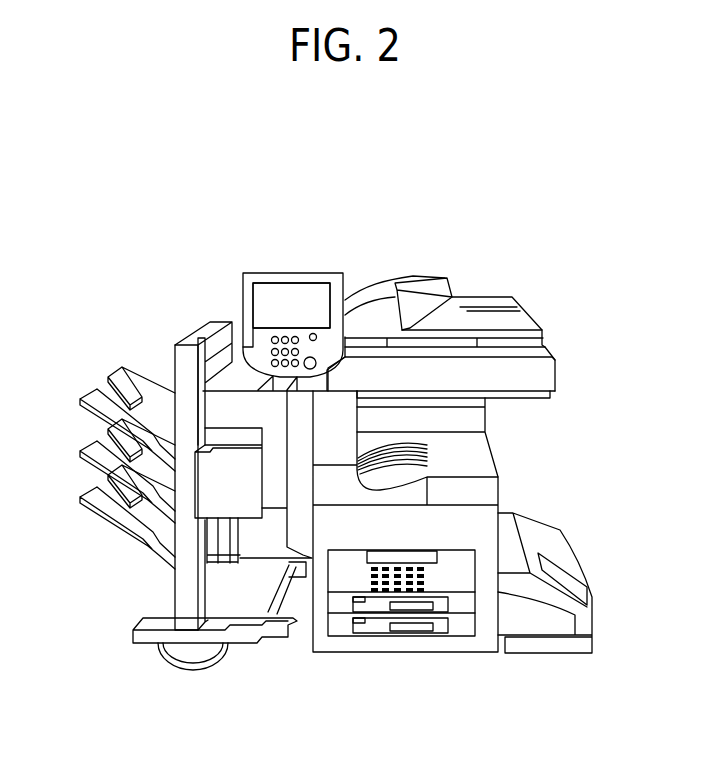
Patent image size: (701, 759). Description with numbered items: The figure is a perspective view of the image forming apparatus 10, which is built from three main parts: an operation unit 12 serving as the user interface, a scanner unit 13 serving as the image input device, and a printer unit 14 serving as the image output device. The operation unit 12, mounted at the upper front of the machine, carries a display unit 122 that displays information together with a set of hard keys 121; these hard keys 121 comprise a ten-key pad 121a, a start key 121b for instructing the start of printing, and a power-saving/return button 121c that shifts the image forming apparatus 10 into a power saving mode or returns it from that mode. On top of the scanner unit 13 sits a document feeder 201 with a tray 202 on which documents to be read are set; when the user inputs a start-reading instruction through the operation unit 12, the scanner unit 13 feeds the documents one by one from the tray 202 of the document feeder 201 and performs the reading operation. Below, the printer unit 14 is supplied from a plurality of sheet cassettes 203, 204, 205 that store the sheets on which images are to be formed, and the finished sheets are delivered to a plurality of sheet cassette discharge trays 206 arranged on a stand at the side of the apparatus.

The image forming apparatus 10 is at (196, 221).
The operation unit 12 is at (288, 250).
The scanner unit 13 is at (420, 246).
The printer unit 14 is at (538, 430).
The hard keys 121 is at (150, 247).
The ten-key pad 121a is at (274, 335).
The start key 121b is at (306, 356).
The power-saving/return button 121c is at (313, 333).
The display unit 122 is at (314, 292).
The document feeder 201 is at (525, 323).
The tray 202 is at (447, 279).
The sheet cassette 203 is at (343, 603).
The sheet cassette 204 is at (470, 627).
The sheet cassette 205 is at (542, 625).
The sheet cassette discharge trays 206 is at (97, 390).